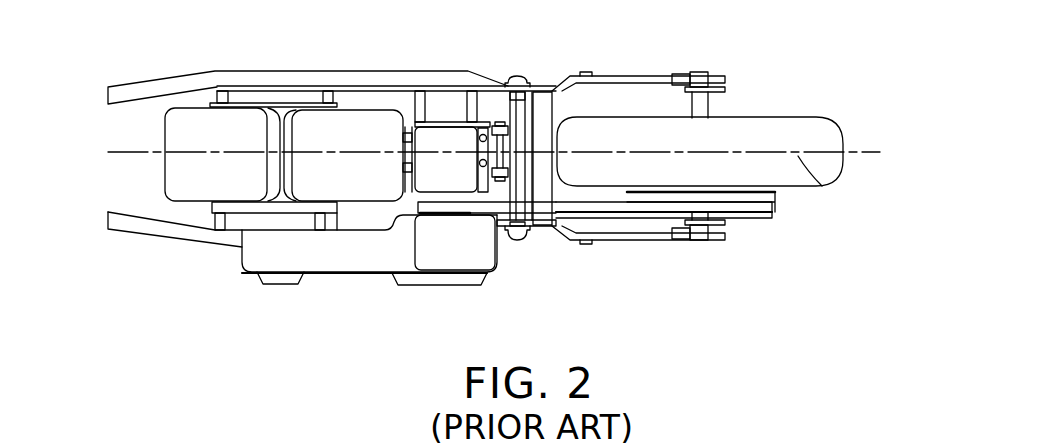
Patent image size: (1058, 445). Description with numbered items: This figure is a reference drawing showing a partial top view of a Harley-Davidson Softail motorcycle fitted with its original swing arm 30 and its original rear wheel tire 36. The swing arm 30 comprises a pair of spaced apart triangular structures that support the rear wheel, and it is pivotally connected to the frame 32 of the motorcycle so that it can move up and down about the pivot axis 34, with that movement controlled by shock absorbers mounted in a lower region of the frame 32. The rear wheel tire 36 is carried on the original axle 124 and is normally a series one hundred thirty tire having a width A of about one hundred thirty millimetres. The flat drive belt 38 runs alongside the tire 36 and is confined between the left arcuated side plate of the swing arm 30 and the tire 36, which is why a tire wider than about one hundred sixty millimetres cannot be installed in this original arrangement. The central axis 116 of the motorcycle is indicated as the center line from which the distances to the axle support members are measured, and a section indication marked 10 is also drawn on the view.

The section line 10 is at (541, 12).
The swing arm 30 is at (630, 75).
The frame 32 is at (409, 71).
The pivot axis 34 is at (514, 75).
The rear wheel tire 36 is at (815, 128).
The drive belt 38 is at (773, 203).
The central axis 116 is at (822, 186).
The original axle 124 is at (709, 78).
The width A is at (915, 263).